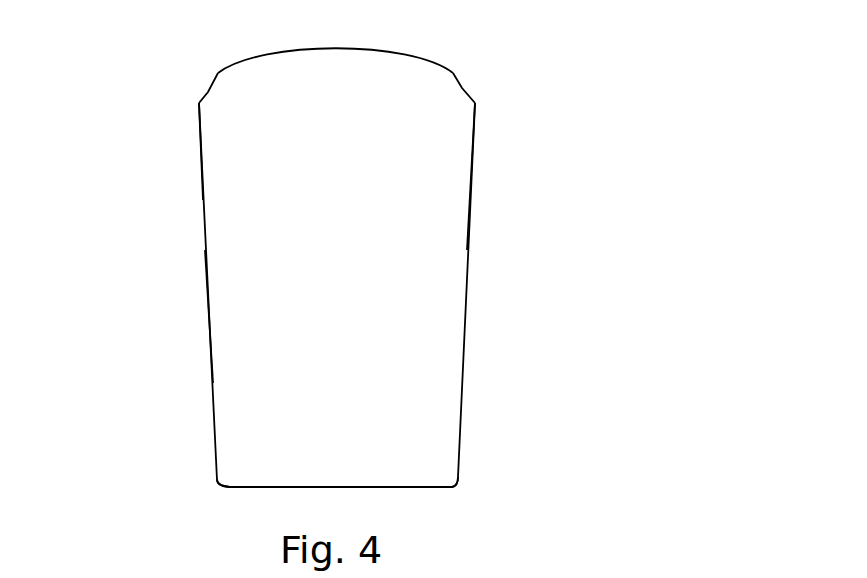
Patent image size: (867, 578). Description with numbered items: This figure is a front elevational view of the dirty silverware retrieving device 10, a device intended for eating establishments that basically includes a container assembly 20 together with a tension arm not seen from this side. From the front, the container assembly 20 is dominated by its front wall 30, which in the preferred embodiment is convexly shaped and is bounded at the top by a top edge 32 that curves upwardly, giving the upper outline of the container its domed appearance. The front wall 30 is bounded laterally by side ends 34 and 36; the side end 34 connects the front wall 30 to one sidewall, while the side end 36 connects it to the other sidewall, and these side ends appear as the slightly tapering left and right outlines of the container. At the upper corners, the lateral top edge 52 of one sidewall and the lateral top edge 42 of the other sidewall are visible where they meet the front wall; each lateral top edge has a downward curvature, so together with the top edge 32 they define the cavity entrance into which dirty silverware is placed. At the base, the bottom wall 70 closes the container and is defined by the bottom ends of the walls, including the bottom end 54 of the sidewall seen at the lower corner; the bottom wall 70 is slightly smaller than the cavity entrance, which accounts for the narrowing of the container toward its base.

The dirty silverware retrieving device 10 is at (615, 135).
The container assembly 20 is at (207, 275).
The front wall 30 is at (333, 373).
The top edge 32 is at (303, 47).
The side end 34 is at (202, 177).
The side end 36 is at (469, 213).
The lateral top edge 42 is at (463, 88).
The lateral top edge 52 is at (207, 90).
The bottom end 54 is at (218, 482).
The bottom wall 70 is at (395, 488).